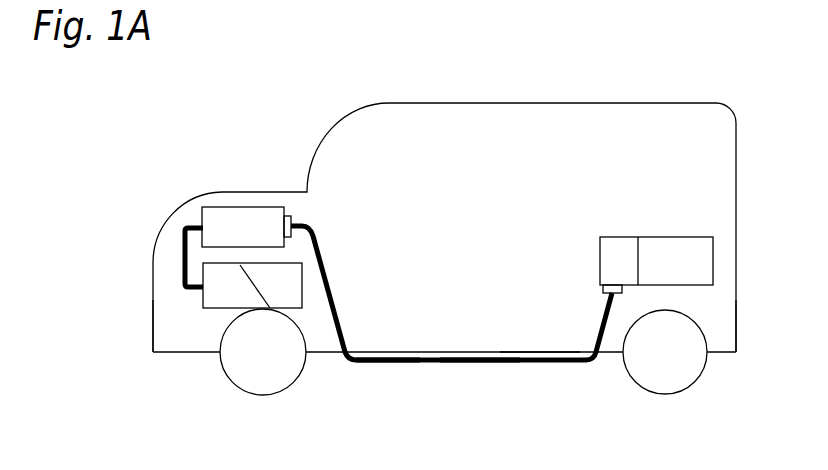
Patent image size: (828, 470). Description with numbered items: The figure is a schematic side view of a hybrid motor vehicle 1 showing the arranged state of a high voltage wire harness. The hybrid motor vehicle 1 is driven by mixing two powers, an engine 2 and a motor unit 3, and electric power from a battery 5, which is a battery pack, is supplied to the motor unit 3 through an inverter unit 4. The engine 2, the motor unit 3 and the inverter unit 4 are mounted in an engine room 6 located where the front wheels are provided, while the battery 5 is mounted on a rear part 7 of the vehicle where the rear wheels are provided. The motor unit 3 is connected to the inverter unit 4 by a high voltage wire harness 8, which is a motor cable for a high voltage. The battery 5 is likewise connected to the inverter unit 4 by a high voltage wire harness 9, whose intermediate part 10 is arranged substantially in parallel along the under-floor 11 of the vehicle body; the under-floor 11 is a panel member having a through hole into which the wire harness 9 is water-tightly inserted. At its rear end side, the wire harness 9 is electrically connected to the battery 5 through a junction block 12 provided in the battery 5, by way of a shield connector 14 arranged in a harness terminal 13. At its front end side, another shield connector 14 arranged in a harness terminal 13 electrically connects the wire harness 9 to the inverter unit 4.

The hybrid motor vehicle 1 is at (493, 101).
The engine 2 is at (288, 293).
The motor unit 3 is at (222, 297).
The inverter unit 4 is at (232, 222).
The battery 5 is at (682, 250).
The engine room 6 is at (158, 326).
The rear part 7 is at (718, 318).
The high voltage wire harness 8 is at (182, 260).
The high voltage wire harness 9 is at (380, 363).
The intermediate part 10 is at (482, 364).
The under-floor 11 is at (540, 354).
The junction block 12 is at (622, 250).
The harness terminal 13 is at (311, 227).
The shield connector 14 is at (293, 216).